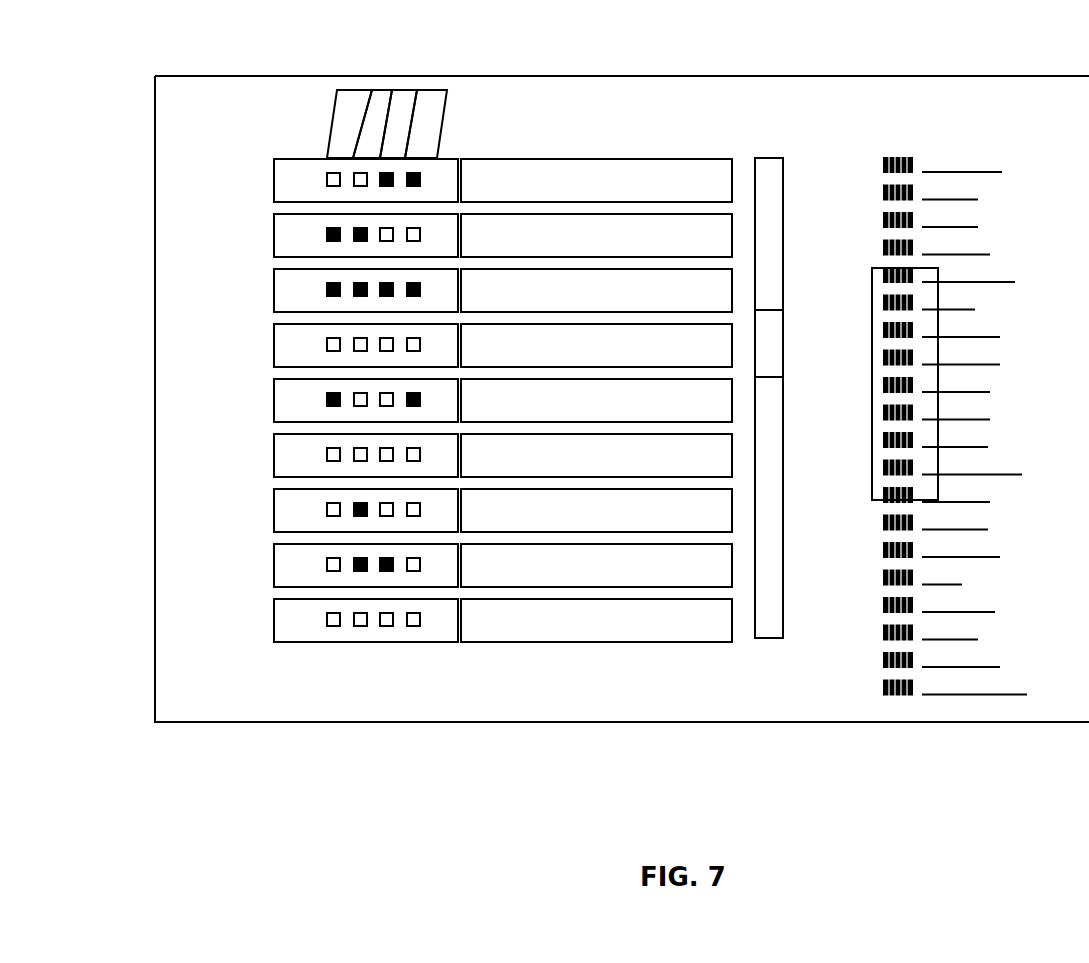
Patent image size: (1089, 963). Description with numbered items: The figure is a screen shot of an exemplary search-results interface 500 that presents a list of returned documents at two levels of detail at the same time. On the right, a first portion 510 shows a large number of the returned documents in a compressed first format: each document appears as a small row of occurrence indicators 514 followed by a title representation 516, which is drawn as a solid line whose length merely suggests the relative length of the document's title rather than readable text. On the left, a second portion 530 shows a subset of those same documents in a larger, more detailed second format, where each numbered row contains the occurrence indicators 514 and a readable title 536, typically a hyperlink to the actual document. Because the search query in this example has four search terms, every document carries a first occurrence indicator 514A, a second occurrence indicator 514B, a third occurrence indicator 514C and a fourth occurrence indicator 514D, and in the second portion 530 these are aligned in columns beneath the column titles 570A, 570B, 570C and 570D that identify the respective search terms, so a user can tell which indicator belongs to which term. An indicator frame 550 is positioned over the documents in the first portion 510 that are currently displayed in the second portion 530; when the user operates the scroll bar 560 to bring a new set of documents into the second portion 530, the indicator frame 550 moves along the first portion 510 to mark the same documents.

The interface 500 is at (795, 76).
The first portion 510 is at (870, 693).
The occurrence indicator 514 is at (355, 282).
The first occurrence indicator 514A is at (333, 639).
The second occurrence indicator 514B is at (360, 639).
The third occurrence indicator 514C is at (386, 639).
The fourth occurrence indicator 514D is at (413, 639).
The title representation 516 is at (985, 172).
The second portion 530 is at (260, 693).
The title 536 is at (508, 402).
The indicator frame 550 is at (872, 313).
The scroll bar 560 is at (783, 353).
The column title 570A is at (337, 90).
The column title 570B is at (365, 96).
The column title 570C is at (401, 90).
The column title 570D is at (426, 105).